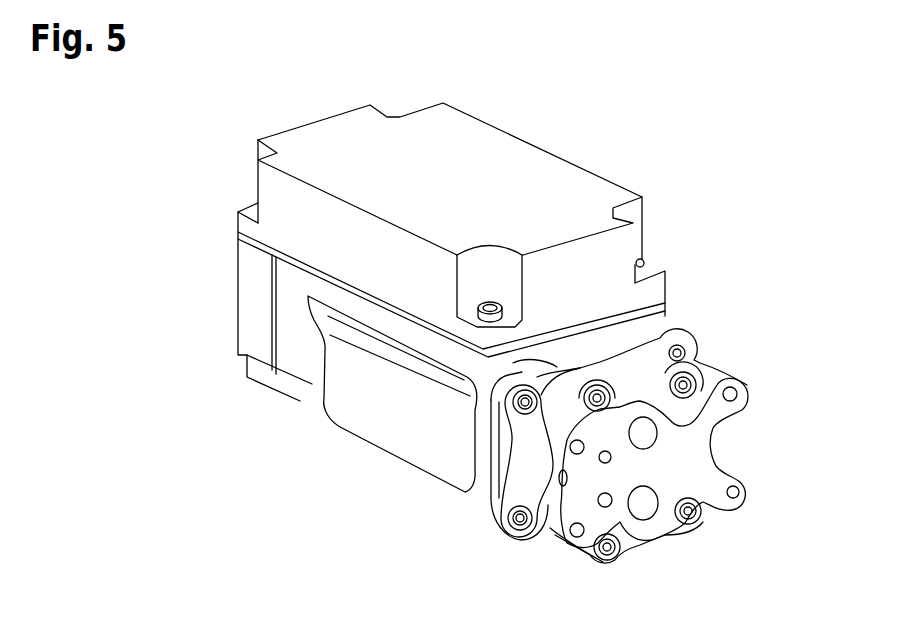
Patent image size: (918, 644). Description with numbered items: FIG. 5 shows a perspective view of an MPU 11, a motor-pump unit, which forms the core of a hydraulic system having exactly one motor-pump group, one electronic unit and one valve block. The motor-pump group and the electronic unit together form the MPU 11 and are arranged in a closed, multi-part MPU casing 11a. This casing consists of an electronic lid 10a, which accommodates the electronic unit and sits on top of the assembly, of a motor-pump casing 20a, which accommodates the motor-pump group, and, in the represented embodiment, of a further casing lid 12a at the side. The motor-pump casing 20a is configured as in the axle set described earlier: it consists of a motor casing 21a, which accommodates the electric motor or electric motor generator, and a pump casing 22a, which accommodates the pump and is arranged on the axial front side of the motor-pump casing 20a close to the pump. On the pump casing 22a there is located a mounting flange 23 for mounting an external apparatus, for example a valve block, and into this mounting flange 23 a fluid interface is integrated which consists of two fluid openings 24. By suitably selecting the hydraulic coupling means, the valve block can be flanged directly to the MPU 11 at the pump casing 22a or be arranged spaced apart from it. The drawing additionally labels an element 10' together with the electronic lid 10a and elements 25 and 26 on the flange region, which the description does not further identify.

The compressor housing (variant) 10' is at (461, 214).
The electronic lid 10a is at (545, 152).
The MPU (motor-pump unit) 11 is at (482, 364).
The MPU casing 11a is at (648, 173).
The further casing lid 12a is at (240, 306).
The motor-pump casing 20a is at (476, 590).
The motor casing 21a is at (398, 460).
The pump casing 22a is at (492, 498).
The mounting flange 23 is at (563, 512).
The fluid openings 24 is at (666, 522).
The fastening lug / hole 25 is at (740, 404).
The port opening 26 is at (610, 497).